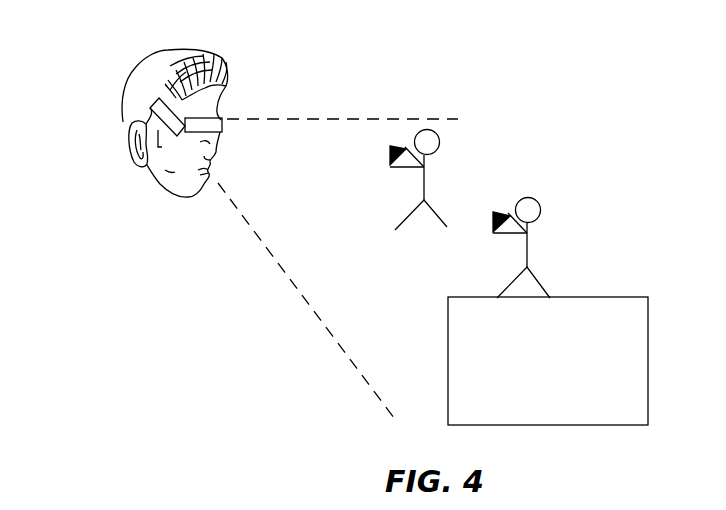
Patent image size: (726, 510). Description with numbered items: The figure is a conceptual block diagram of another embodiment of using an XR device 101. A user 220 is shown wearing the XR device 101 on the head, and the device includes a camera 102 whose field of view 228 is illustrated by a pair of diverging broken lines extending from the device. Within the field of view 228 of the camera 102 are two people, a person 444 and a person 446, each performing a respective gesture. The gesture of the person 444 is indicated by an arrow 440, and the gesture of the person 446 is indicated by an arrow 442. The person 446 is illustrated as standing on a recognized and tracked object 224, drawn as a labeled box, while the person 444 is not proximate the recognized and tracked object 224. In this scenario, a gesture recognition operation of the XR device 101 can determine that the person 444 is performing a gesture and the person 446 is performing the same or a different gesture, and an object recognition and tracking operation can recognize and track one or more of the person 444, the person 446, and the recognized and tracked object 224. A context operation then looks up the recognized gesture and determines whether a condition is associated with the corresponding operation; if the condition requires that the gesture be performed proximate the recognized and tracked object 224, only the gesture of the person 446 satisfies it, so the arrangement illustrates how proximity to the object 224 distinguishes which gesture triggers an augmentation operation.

The user 220 is at (148, 75).
The camera 102 is at (127, 129).
The XR device 101 is at (222, 121).
The field of view 228 is at (404, 119).
The arrow 440 is at (402, 147).
The person 444 is at (439, 146).
The arrow 442 is at (508, 214).
The person 446 is at (541, 212).
The recognized and tracked object 224 is at (648, 318).